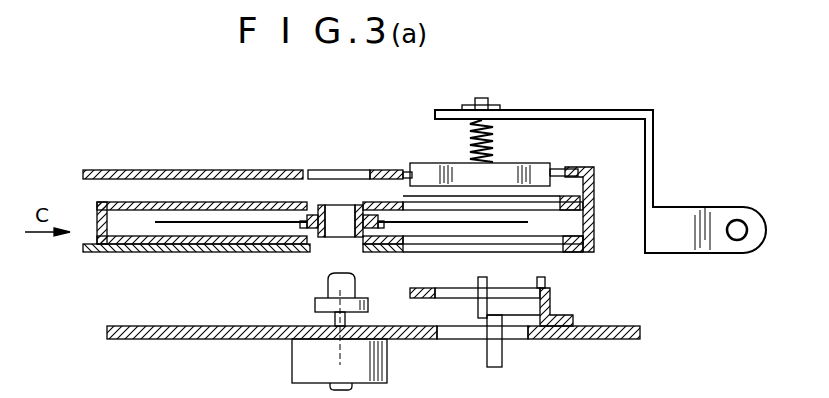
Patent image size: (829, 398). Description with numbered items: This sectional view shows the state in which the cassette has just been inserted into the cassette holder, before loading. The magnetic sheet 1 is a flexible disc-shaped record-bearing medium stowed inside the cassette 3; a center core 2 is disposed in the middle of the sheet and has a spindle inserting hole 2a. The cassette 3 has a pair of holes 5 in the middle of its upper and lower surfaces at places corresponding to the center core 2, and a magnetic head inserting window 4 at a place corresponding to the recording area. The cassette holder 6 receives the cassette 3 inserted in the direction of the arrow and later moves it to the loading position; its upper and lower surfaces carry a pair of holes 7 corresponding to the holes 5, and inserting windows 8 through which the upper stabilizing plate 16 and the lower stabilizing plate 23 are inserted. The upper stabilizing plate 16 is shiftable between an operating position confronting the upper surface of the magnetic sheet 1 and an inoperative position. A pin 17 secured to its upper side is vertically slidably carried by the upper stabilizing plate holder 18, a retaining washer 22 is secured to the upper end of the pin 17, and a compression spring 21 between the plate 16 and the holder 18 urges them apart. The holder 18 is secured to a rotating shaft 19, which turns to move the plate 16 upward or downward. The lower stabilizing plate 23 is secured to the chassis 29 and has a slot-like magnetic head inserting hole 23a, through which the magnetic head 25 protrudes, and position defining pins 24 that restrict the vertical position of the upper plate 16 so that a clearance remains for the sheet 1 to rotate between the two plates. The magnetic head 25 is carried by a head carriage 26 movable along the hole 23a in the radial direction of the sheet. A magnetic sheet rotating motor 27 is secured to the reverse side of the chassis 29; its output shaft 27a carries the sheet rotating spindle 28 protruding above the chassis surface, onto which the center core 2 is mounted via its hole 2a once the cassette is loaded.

The magnetic sheet 1 is at (243, 220).
The center core 2 is at (323, 205).
The spindle inserting hole 2a is at (341, 213).
The cassette 3 is at (170, 248).
The magnetic head inserting window 4 is at (553, 200).
The holes 5 is at (372, 200).
The cassette holder 6 is at (170, 170).
The holes 7 is at (358, 171).
The inserting windows 8 is at (560, 168).
The upper stabilizing plate 16 is at (427, 168).
The pin 17 is at (481, 97).
The upper stabilizing plate holder 18 is at (592, 110).
The rotating shaft 19 is at (737, 220).
The compression spring 21 is at (493, 138).
The retaining washer 22 is at (497, 105).
The lower stabilizing plate 23 is at (565, 315).
The magnetic head inserting hole 23a is at (458, 291).
The position defining pins 24 is at (538, 286).
The magnetic head 25 is at (477, 316).
The head carriage 26 is at (500, 350).
The magnetic sheet rotating motor 27 is at (382, 360).
The output shaft 27a is at (333, 324).
The sheet rotating spindle 28 is at (328, 280).
The chassis 29 is at (226, 326).